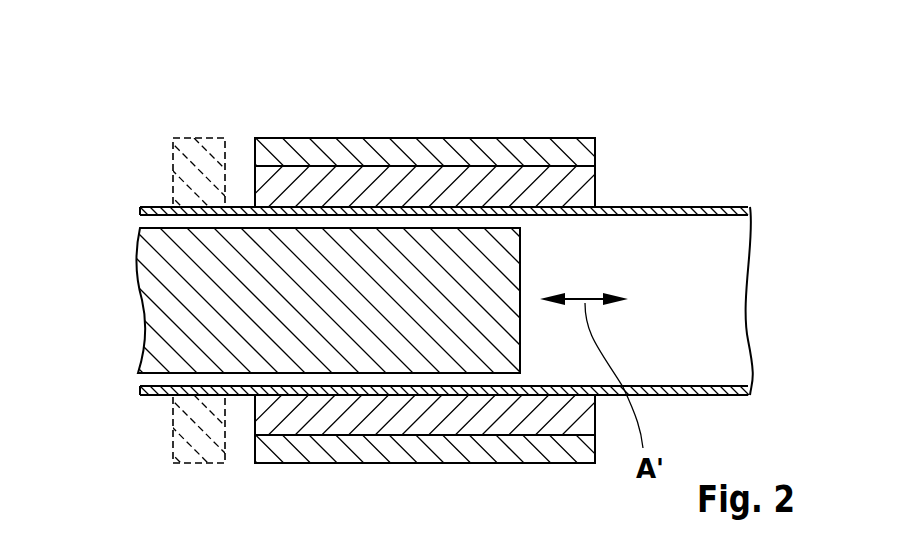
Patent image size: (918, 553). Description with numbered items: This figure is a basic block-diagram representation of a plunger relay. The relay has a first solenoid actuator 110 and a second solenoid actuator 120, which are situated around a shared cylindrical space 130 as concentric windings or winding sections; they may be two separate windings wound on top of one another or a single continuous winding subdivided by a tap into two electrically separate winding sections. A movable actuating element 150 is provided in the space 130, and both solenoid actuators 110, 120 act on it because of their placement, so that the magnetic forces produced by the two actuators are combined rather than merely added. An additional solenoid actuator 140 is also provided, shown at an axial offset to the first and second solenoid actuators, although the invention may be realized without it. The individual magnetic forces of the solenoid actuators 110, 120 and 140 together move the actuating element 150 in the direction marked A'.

The first solenoid actuator 110 is at (594, 186).
The second solenoid actuator 120 is at (542, 155).
The shared cylindrical space 130 is at (723, 223).
The additional solenoid actuator 140 is at (206, 150).
The actuating element 150 is at (157, 291).